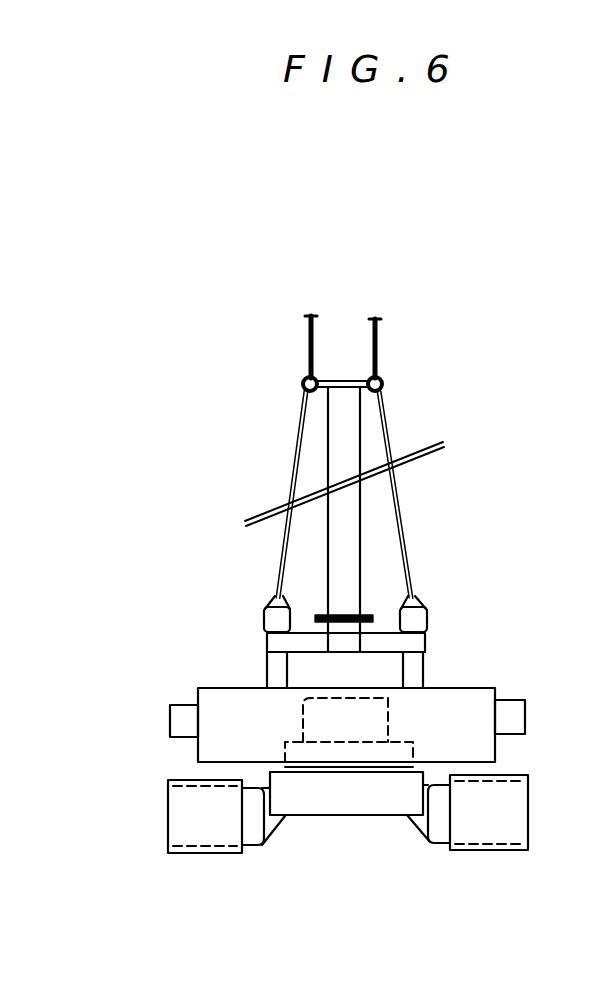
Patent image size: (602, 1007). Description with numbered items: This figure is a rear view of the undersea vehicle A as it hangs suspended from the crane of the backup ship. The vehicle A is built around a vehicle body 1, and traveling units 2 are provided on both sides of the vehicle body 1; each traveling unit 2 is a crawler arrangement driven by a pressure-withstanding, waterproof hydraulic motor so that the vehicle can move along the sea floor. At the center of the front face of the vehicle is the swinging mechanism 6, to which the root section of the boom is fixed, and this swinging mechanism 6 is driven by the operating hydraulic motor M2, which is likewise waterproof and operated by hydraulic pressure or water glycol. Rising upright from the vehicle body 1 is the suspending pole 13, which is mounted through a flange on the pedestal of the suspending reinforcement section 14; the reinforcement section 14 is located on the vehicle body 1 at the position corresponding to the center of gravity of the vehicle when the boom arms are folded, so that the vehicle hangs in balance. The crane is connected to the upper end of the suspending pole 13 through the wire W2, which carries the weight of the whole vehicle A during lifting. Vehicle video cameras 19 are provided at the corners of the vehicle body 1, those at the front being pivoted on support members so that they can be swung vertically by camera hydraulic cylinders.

The vehicle body 1 is at (463, 688).
The traveling unit 2 is at (528, 769).
The swinging mechanism 6 is at (422, 773).
The suspending pole 13 is at (363, 547).
The suspending reinforcement section 14 is at (266, 672).
The vehicle video camera 19 is at (169, 715).
The undersea vehicle A is at (442, 687).
The operating hydraulic motor M2 is at (393, 725).
The wire W2 is at (420, 308).